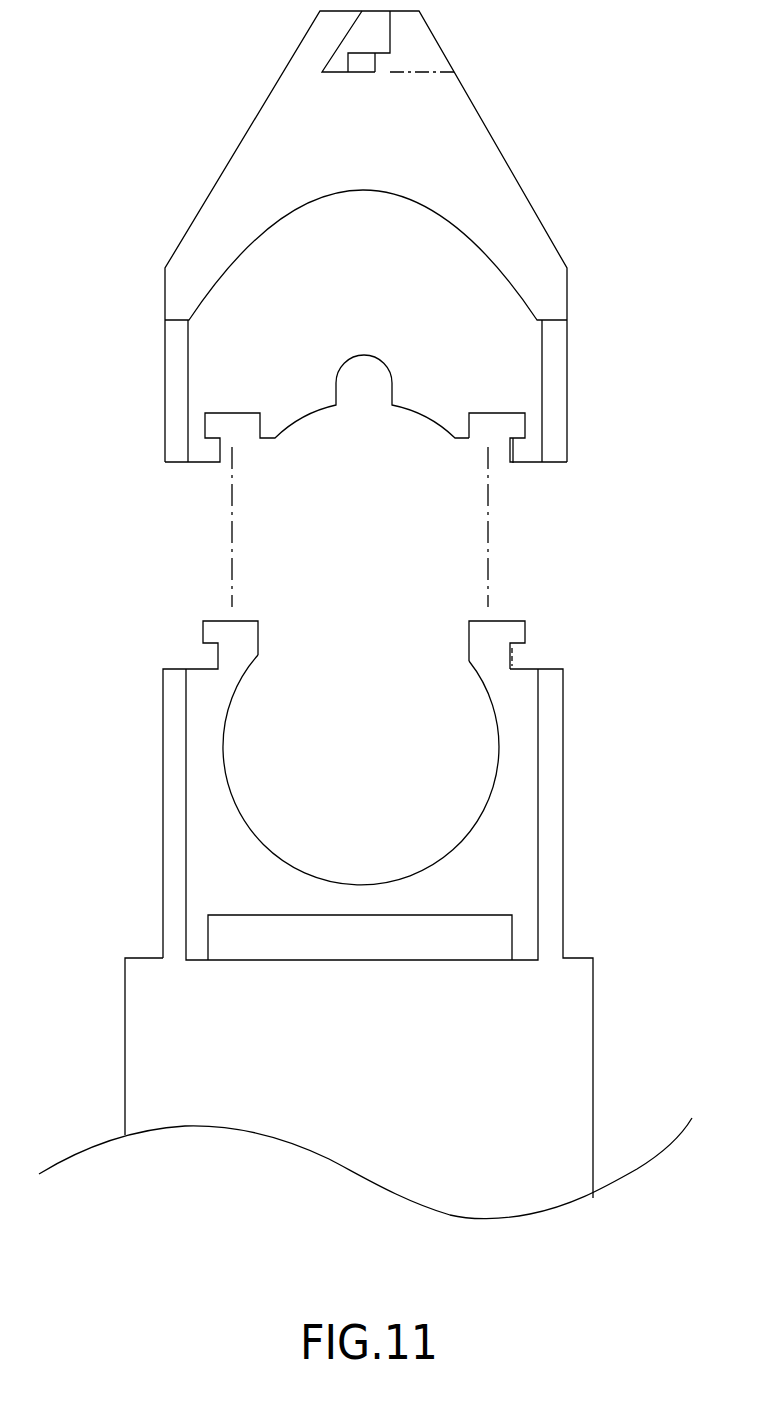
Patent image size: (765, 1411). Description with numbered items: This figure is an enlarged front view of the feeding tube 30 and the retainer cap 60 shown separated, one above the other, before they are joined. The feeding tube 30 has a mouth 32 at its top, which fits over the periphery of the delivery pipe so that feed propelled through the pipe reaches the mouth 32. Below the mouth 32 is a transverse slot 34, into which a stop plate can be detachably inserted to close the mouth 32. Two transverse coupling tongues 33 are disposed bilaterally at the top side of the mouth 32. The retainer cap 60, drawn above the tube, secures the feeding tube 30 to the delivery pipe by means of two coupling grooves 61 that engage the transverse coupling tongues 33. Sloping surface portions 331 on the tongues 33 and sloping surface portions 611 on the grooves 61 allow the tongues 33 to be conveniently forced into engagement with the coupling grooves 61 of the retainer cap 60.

The retainer cap 60 is at (580, 161).
The coupling groove 61 is at (498, 430).
The sloping surface portion 611 is at (515, 449).
The feeding tube 30 is at (596, 856).
The mouth 32 is at (428, 745).
The transverse coupling tongue 33 is at (507, 626).
The sloping surface portion 331 is at (512, 663).
The transverse slot 34 is at (473, 938).